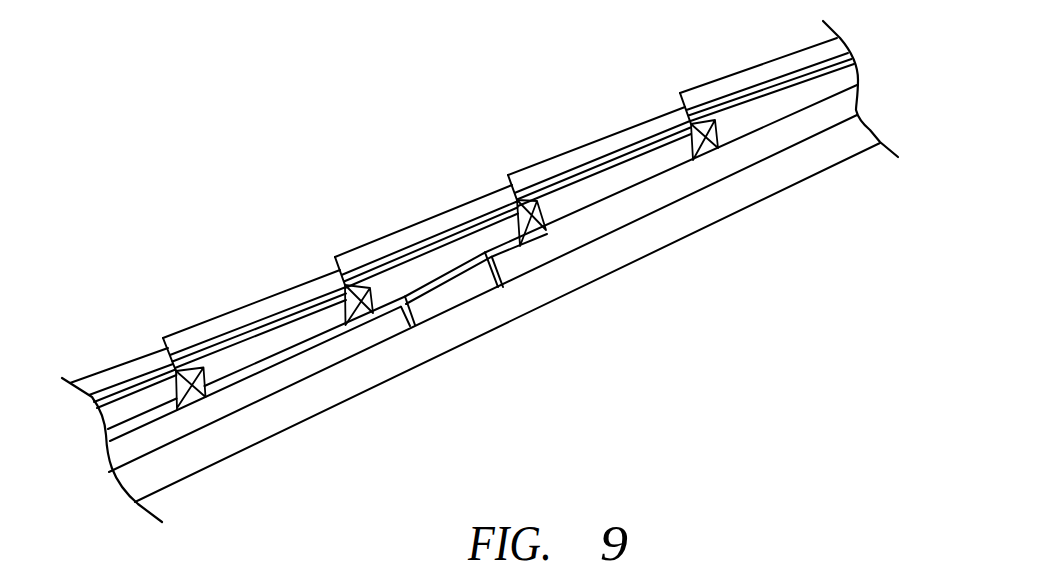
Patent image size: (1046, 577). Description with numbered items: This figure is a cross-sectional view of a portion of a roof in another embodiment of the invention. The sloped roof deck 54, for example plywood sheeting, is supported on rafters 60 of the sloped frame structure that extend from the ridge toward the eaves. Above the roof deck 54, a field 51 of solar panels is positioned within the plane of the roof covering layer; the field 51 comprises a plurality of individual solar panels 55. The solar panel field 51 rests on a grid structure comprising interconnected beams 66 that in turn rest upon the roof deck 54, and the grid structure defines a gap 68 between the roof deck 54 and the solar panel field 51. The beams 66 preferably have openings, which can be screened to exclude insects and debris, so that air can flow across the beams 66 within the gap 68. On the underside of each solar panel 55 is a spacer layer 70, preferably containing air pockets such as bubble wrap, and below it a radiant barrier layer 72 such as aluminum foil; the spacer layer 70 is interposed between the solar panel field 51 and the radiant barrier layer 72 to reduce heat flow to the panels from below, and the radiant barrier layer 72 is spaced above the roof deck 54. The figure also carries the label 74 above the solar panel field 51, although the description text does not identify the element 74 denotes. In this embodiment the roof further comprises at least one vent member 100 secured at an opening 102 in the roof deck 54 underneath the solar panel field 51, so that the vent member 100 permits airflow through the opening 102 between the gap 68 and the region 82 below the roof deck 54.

The field of solar panels 51 is at (425, 216).
The roof deck 54 is at (166, 435).
The solar panel 55 is at (137, 380).
The rafter 60 is at (228, 442).
The beam 66 is at (106, 430).
The gap 68 is at (249, 380).
The spacer layer 70 is at (202, 346).
The radiant barrier layer 72 is at (243, 343).
The rail top surface 74 is at (398, 93).
The region below the roof deck 82 is at (629, 402).
The vent member 100 is at (492, 276).
The opening 102 is at (408, 322).